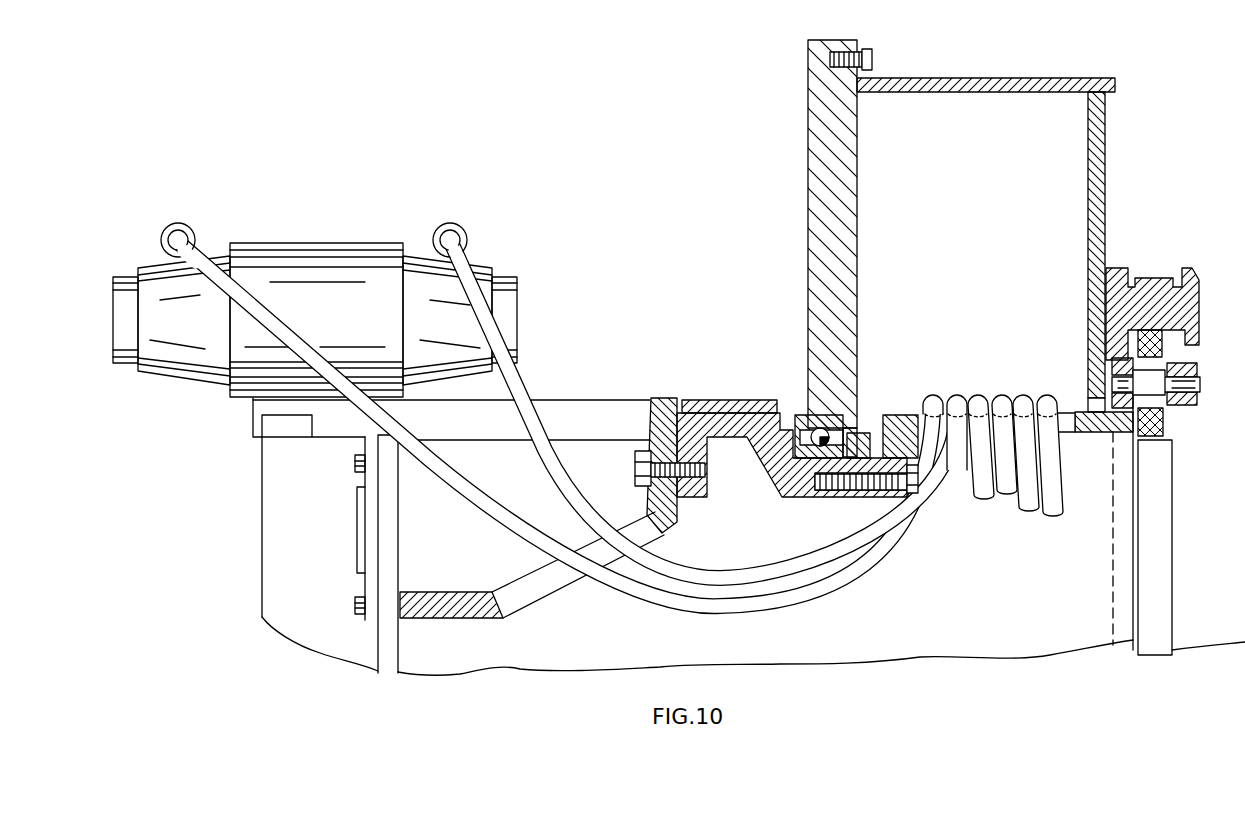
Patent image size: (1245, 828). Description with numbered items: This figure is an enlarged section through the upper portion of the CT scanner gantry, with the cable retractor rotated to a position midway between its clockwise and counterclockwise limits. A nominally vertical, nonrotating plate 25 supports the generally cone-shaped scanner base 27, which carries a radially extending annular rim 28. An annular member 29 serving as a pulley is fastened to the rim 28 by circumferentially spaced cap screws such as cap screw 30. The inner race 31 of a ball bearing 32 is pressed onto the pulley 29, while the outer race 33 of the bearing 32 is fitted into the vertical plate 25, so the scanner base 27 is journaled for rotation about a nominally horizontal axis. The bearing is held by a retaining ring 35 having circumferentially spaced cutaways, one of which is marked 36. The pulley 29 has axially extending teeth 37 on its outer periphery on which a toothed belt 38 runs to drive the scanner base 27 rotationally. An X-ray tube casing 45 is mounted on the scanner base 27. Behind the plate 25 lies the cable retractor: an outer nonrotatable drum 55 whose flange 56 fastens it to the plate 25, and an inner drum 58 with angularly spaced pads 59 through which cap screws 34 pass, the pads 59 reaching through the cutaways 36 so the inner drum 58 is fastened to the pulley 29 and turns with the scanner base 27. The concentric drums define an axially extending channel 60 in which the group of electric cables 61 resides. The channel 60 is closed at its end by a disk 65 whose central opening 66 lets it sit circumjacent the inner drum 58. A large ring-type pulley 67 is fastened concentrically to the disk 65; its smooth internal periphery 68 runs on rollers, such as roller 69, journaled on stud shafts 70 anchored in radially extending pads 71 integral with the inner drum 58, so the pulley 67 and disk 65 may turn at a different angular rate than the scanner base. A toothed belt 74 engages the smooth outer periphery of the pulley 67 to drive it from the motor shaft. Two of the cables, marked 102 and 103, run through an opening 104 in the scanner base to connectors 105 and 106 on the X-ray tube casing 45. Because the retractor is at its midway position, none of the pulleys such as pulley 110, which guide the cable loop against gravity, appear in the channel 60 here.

The nominally vertical plate 25 is at (818, 198).
The scanner base 27 is at (385, 650).
The annular rim 28 is at (658, 397).
The annular member 29 is at (731, 442).
The cap screw 30 is at (632, 464).
The inner race 31 is at (797, 478).
The ball bearing 32 is at (790, 397).
The outer race 33 is at (830, 424).
The cap screw 34 is at (828, 488).
The retaining ring 35 is at (870, 430).
The cutaway 36 is at (878, 453).
The teeth 37 is at (705, 410).
The toothed belt 38 is at (732, 398).
The X-ray tube casing 45 is at (308, 267).
The outer nonrotatable drum 55 is at (985, 78).
The flange 56 is at (873, 60).
The inner drum 58 is at (1100, 435).
The pads 59 is at (900, 562).
The channel 60 is at (1065, 135).
The cable group 61 is at (981, 463).
The disk 65 is at (1103, 202).
The central opening 66 is at (1092, 410).
The ring-type pulley 67 is at (1200, 325).
The internal periphery 68 is at (1178, 332).
The roller 69 is at (1177, 452).
The stud shaft 70 is at (1130, 420).
The pad 71 is at (1120, 360).
The toothed belt 74 is at (1150, 272).
The cable 102 is at (680, 600).
The cable 103 is at (753, 579).
The opening 104 is at (551, 577).
The connector 105 is at (181, 226).
The connector 106 is at (463, 222).
The pulley 110 is at (1067, 423).